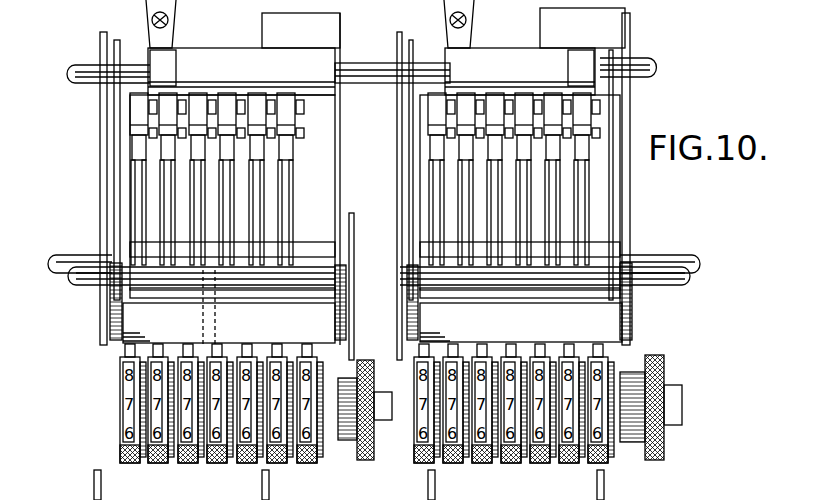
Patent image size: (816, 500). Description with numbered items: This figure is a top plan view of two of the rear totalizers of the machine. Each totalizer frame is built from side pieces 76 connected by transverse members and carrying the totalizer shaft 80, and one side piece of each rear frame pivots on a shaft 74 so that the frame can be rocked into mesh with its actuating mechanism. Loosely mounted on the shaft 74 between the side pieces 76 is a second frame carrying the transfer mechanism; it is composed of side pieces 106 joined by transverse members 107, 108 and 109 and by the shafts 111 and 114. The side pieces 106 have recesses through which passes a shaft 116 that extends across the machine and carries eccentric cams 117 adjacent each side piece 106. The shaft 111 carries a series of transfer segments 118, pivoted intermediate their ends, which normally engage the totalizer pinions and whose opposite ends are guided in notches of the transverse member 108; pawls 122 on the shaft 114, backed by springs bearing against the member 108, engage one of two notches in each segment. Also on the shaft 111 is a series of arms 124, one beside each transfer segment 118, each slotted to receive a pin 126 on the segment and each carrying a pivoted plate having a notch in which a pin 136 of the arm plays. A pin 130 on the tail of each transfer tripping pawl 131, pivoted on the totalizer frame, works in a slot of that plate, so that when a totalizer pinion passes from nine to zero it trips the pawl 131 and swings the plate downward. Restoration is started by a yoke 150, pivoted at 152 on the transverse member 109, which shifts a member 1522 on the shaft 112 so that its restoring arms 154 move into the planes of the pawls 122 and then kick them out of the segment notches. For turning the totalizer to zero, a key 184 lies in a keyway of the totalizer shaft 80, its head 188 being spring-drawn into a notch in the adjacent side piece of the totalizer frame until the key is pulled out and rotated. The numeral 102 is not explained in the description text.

The shaft 74 is at (58, 266).
The side pieces 76 is at (110, 318).
The totalizer shaft 80 is at (668, 396).
The counter wheel assembly 102 is at (112, 352).
The side pieces 106 is at (126, 165).
The transverse member 107 is at (626, 326).
The transverse member 108 is at (138, 130).
The transverse member 109 is at (422, 23).
The shaft 111 is at (308, 245).
The shaft 112 is at (88, 82).
The shaft 114 is at (190, 140).
The shaft 116 is at (76, 286).
The eccentric cams 117 is at (110, 298).
The transfer segments 118 is at (427, 165).
The pawls 122 is at (290, 100).
The arms 124 is at (262, 200).
The pin 126 is at (522, 205).
The pin 130 is at (212, 272).
The transfer tripping pawls 131 is at (214, 298).
The pin 136 is at (215, 218).
The yoke 150 is at (148, 8).
The pivot 152 is at (172, 20).
The member 1522 is at (170, 65).
The restoring arms 154 is at (178, 100).
The key 184 is at (346, 442).
The head 188 is at (372, 460).